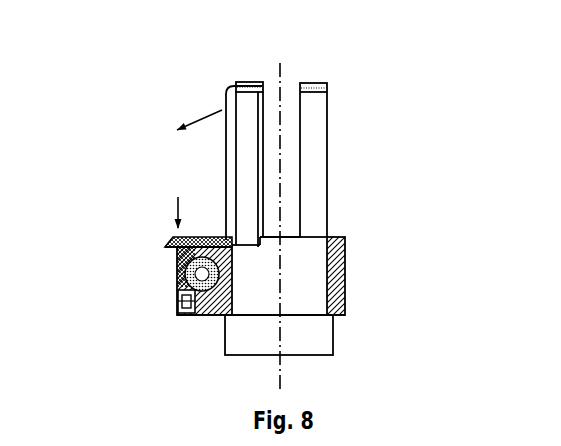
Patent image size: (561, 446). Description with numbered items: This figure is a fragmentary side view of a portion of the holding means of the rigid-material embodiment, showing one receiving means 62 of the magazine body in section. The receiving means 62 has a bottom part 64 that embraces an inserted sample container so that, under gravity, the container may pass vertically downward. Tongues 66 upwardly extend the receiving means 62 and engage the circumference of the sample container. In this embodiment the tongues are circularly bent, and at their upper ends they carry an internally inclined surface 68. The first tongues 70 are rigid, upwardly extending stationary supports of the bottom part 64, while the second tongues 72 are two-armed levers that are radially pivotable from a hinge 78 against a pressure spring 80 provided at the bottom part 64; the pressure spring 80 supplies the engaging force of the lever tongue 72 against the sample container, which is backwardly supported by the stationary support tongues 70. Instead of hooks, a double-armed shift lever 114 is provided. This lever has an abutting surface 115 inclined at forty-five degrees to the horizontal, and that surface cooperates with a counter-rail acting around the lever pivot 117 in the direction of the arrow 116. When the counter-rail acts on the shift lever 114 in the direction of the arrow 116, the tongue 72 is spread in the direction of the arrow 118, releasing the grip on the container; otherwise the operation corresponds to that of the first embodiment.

The receiving means 62 is at (342, 223).
The bottom part 64 is at (335, 286).
The tongues 66 is at (328, 93).
The internally inclined surface 68 is at (262, 83).
The first tongues 70 is at (317, 143).
The second tongues 72 is at (242, 172).
The hinge 78 is at (196, 279).
The pressure spring 80 is at (178, 310).
The double-armed shift lever 114 is at (167, 245).
The abutting surface 115 is at (168, 243).
The arrow 116 is at (175, 198).
The lever pivot 117 is at (210, 285).
The arrow 118 is at (199, 110).